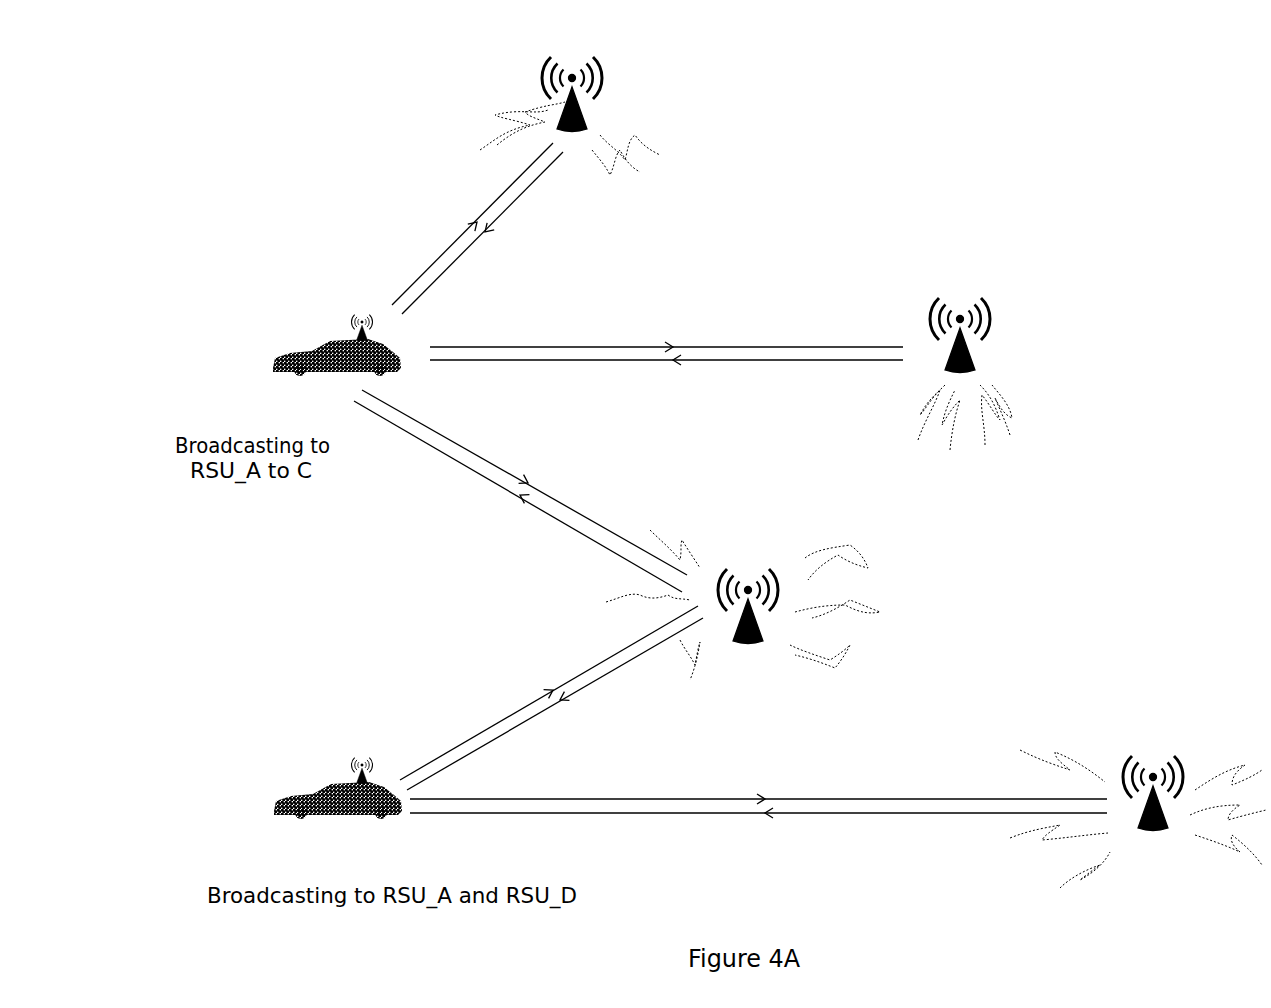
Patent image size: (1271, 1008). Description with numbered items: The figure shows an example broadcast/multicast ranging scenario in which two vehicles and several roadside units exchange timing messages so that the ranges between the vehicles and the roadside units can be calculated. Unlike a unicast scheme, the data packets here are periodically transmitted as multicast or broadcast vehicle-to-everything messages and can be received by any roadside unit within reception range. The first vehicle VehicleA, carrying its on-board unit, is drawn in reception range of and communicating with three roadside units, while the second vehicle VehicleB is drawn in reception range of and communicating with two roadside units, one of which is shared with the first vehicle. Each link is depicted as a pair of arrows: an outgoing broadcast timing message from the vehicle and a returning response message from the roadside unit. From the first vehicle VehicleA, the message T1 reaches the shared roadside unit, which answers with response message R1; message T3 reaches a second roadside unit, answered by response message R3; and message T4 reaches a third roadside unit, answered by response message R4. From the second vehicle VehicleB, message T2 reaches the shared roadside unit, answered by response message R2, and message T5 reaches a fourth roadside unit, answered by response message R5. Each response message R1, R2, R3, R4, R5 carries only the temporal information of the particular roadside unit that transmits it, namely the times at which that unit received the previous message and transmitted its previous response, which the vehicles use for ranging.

The vehicle A VehicleA is at (319, 371).
The vehicle B VehicleB is at (338, 816).
The transmission message T1 is at (524, 482).
The response message R1 is at (518, 496).
The transmission message T2 is at (549, 693).
The response message R2 is at (555, 704).
The transmission message T3 is at (666, 328).
The response message R3 is at (666, 381).
The transmission message T4 is at (472, 224).
The response message R4 is at (482, 233).
The transmission message T5 is at (758, 781).
The response message R5 is at (758, 836).